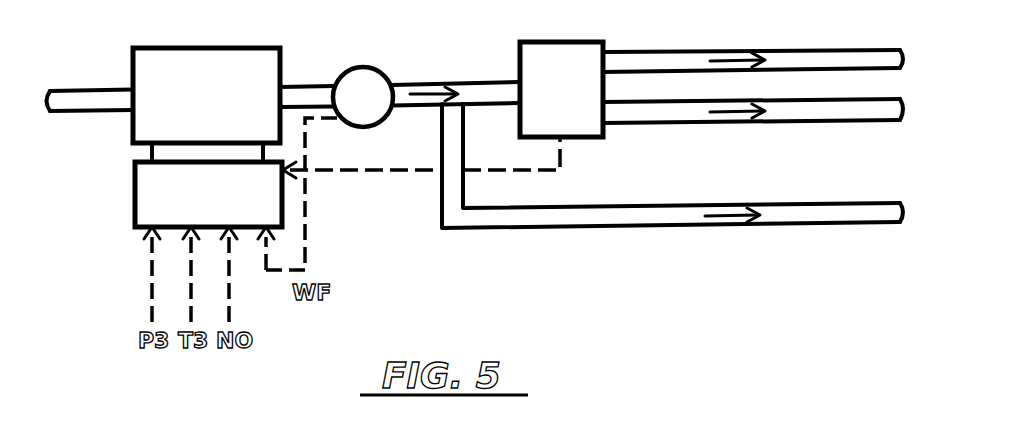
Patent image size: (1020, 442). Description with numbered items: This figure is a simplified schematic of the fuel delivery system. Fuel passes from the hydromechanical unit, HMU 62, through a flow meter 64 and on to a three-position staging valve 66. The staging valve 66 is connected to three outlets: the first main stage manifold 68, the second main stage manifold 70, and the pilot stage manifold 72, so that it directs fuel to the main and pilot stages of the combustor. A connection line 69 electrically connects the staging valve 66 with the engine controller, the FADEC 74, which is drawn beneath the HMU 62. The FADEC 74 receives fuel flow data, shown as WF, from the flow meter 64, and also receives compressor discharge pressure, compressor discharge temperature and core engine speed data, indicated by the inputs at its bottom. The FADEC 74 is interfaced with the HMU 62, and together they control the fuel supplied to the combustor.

The HMU (hydromechanical unit) 62 is at (184, 47).
The flow meter 64 is at (370, 67).
The three-position staging valve 66 is at (583, 42).
The first main stage manifold 68 is at (828, 49).
The connection line 69 is at (404, 172).
The second main stage manifold 70 is at (836, 122).
The pilot stage manifold 72 is at (848, 226).
The FADEC 74 is at (133, 198).